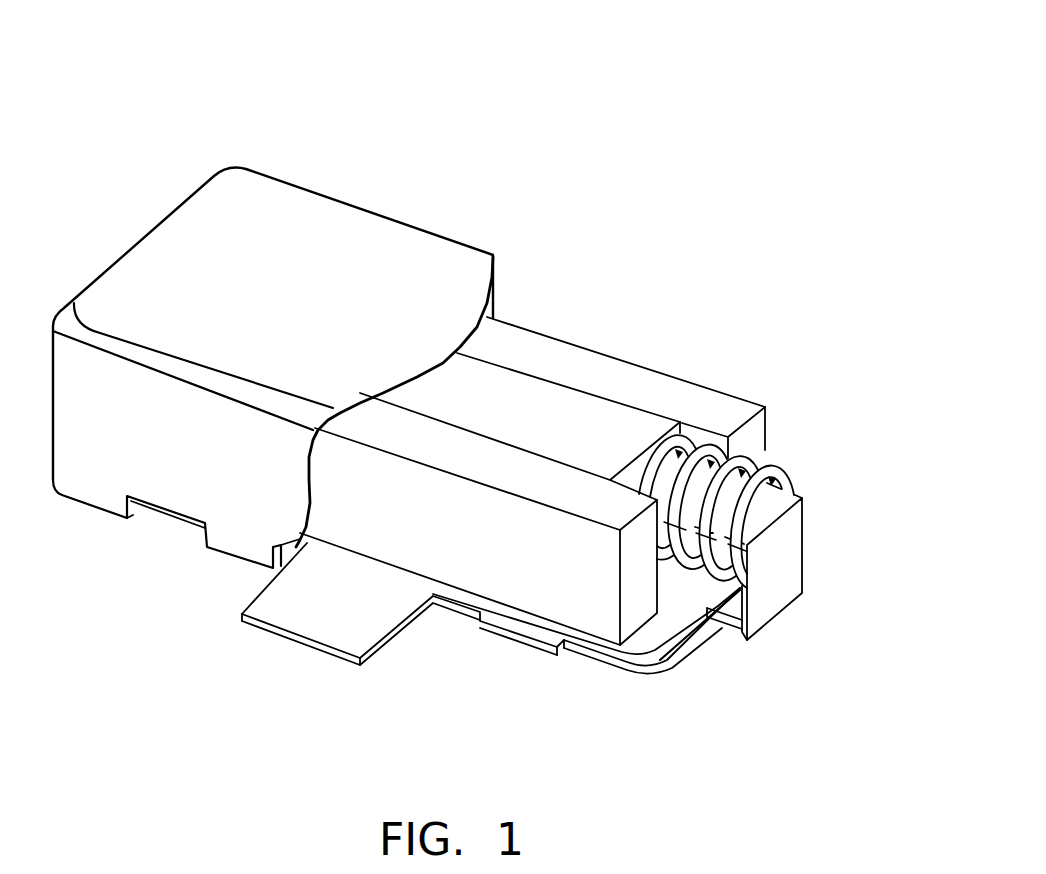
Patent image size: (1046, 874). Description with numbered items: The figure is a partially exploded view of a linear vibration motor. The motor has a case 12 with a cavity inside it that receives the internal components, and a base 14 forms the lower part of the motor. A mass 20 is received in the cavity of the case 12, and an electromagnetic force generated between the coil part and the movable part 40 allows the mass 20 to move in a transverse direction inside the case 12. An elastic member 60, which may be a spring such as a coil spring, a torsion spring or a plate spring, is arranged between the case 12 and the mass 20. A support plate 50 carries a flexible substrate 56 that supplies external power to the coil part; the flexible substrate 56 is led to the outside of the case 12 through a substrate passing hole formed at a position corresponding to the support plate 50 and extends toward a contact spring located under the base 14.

The case 12 is at (323, 232).
The base 14 is at (610, 662).
The mass 20 is at (535, 352).
The movable part 40 is at (607, 433).
The support plate 50 is at (745, 513).
The flexible substrate 56 is at (783, 570).
The elastic member 60 is at (799, 462).